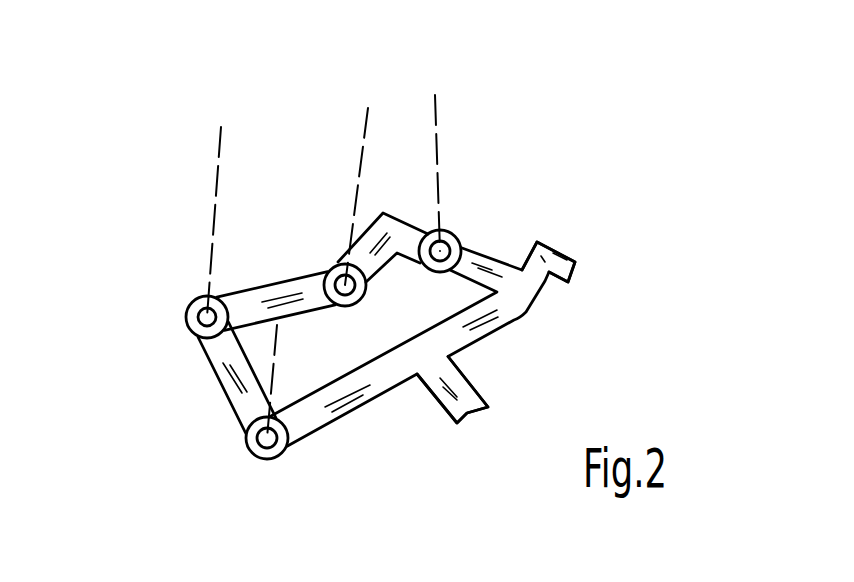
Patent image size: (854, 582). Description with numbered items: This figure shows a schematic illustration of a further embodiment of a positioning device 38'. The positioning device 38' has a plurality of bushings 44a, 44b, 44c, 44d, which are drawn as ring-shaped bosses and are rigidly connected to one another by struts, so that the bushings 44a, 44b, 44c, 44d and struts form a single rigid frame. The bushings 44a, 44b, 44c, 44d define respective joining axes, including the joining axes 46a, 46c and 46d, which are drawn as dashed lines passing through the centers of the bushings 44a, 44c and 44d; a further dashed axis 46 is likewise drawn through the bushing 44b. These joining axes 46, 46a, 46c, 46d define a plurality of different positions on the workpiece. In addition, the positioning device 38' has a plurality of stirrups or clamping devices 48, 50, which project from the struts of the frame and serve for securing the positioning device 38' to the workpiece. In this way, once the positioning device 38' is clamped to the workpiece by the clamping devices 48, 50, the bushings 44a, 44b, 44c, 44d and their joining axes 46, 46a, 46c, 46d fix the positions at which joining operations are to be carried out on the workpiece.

The positioning device 38' is at (480, 252).
The bushing 44a is at (193, 316).
The bushing 44b is at (340, 277).
The bushing 44c is at (440, 251).
The bushing 44d is at (278, 443).
The pivot axis 46 is at (365, 147).
The joining axis 46a is at (211, 192).
The joining axis 46c is at (437, 153).
The joining axis 46d is at (273, 368).
The clamping device 48 is at (580, 262).
The clamping device 50 is at (468, 410).